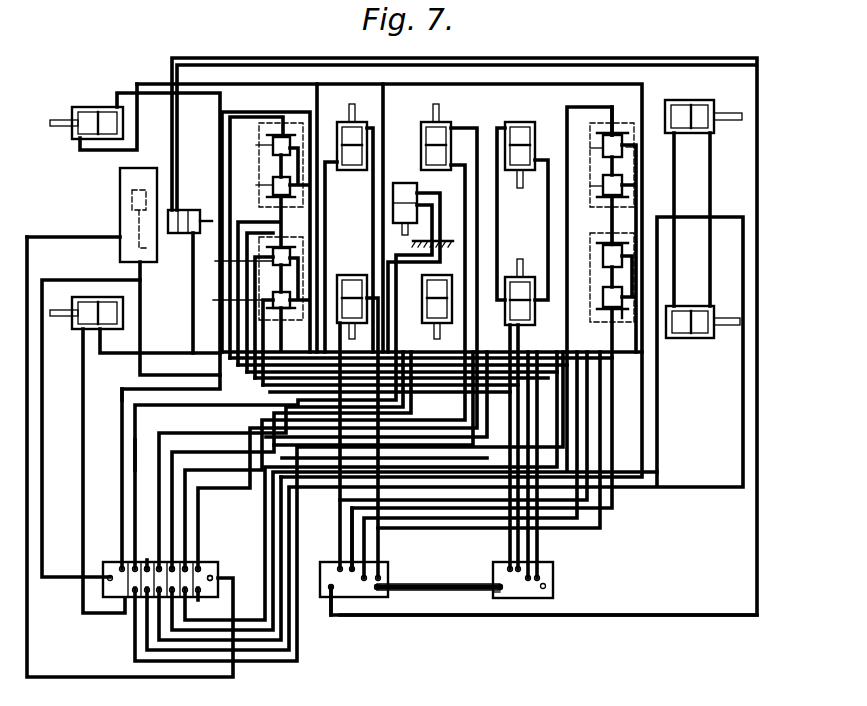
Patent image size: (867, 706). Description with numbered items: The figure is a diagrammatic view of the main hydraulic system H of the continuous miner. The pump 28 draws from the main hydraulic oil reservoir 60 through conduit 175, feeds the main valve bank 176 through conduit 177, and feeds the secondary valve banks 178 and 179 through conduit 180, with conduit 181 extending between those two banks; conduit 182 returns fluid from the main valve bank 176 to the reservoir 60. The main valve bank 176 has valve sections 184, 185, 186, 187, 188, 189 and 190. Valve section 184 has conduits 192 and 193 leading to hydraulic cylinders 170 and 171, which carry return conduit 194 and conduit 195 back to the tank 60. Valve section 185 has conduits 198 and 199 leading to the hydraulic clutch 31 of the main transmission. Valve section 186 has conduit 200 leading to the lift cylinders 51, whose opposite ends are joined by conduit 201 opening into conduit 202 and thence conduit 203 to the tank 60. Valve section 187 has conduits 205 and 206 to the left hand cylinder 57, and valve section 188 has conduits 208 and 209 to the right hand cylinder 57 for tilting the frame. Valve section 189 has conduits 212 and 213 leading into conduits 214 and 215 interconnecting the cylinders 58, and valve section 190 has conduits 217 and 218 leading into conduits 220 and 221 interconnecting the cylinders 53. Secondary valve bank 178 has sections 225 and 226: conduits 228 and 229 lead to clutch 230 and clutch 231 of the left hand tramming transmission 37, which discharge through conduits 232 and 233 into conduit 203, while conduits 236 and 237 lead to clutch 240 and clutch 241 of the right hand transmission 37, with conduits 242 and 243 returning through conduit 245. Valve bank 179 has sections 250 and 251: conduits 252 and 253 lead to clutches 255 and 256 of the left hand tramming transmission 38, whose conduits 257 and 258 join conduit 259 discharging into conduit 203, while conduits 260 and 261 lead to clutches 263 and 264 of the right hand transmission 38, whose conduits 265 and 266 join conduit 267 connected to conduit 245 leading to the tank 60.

The main hydraulic system H is at (587, 45).
The conduit 203 is at (343, 84).
The conduit 195 is at (105, 152).
The hydraulic cylinder 171 is at (88, 106).
The hydraulic cylinder 170 is at (74, 328).
The return conduit 194 is at (100, 353).
The conduit 192 is at (83, 440).
The main hydraulic oil reservoir 60 is at (120, 190).
The conduit 182 is at (118, 680).
The conduit 177 is at (74, 580).
The pump 28 is at (186, 210).
The conduit 175 is at (175, 248).
The valve section 184 is at (122, 565).
The conduit 193 is at (120, 421).
The conduit 205 is at (175, 412).
The conduit 198 is at (135, 465).
The valve bank section 185 is at (146, 566).
The valve bank section 186 is at (142, 566).
The conduit 208 is at (238, 433).
The valve bank section 187 is at (158, 565).
The conduit 212 is at (223, 462).
The valve bank section 188 is at (171, 565).
The conduit 217 is at (238, 480).
The valve bank section 189 is at (192, 565).
The main valve bank 176 is at (202, 565).
The valve bank section 190 is at (200, 560).
The conduit 218 is at (255, 552).
The conduit 206 is at (265, 661).
The conduit 209 is at (290, 652).
The conduit 213 is at (285, 641).
The conduit 200 is at (145, 638).
The conduit 199 is at (133, 624).
The conduit 245 is at (618, 357).
The tramming transmission 38 is at (296, 118).
The conduit 257 is at (278, 150).
The hydraulic clutch 255 is at (253, 143).
The conduit 258 is at (298, 182).
The hydraulic clutch 256 is at (253, 183).
The conduit 265 is at (278, 265).
The conduit 266 is at (298, 300).
The hydraulic clutch 263 is at (233, 255).
The hydraulic clutch 264 is at (228, 295).
The conduit 267 is at (312, 333).
The conduit 259 is at (313, 98).
The conduit 201 is at (372, 242).
The hydraulic cylinder 51 is at (355, 175).
The conduit 202 is at (388, 104).
The hydraulic cylinder 57 is at (445, 120).
The hydraulic clutch 31 is at (412, 182).
The hydraulic cylinder 58 is at (535, 120).
The conduit 215 is at (500, 193).
The conduit 214 is at (546, 210).
The tramming transmission 37 is at (626, 120).
The clutch 230 is at (599, 145).
The conduit 232 is at (630, 145).
The hydraulic clutch 231 is at (599, 186).
The conduit 233 is at (630, 185).
The clutch 240 is at (627, 226).
The conduit 242 is at (645, 235).
The conduit 243 is at (628, 290).
The hydraulic clutch 241 is at (632, 321).
The hydraulic cylinder 53 is at (680, 100).
The conduit 221 is at (676, 190).
The conduit 220 is at (709, 255).
The valve bank section 225 is at (330, 566).
The conduit 180 is at (570, 618).
The valve bank section 226 is at (360, 597).
The conduit 228 is at (339, 510).
The conduit 252 is at (507, 537).
The conduit 229 is at (349, 530).
The conduit 253 is at (515, 548).
The conduit 236 is at (362, 535).
The conduit 260 is at (531, 538).
The conduit 237 is at (372, 548).
The conduit 261 is at (540, 552).
The secondary valve bank 178 is at (388, 585).
The conduit 181 is at (432, 590).
The valve bank section 251 is at (553, 582).
The valve bank section 250 is at (500, 594).
The secondary valve bank 179 is at (553, 597).